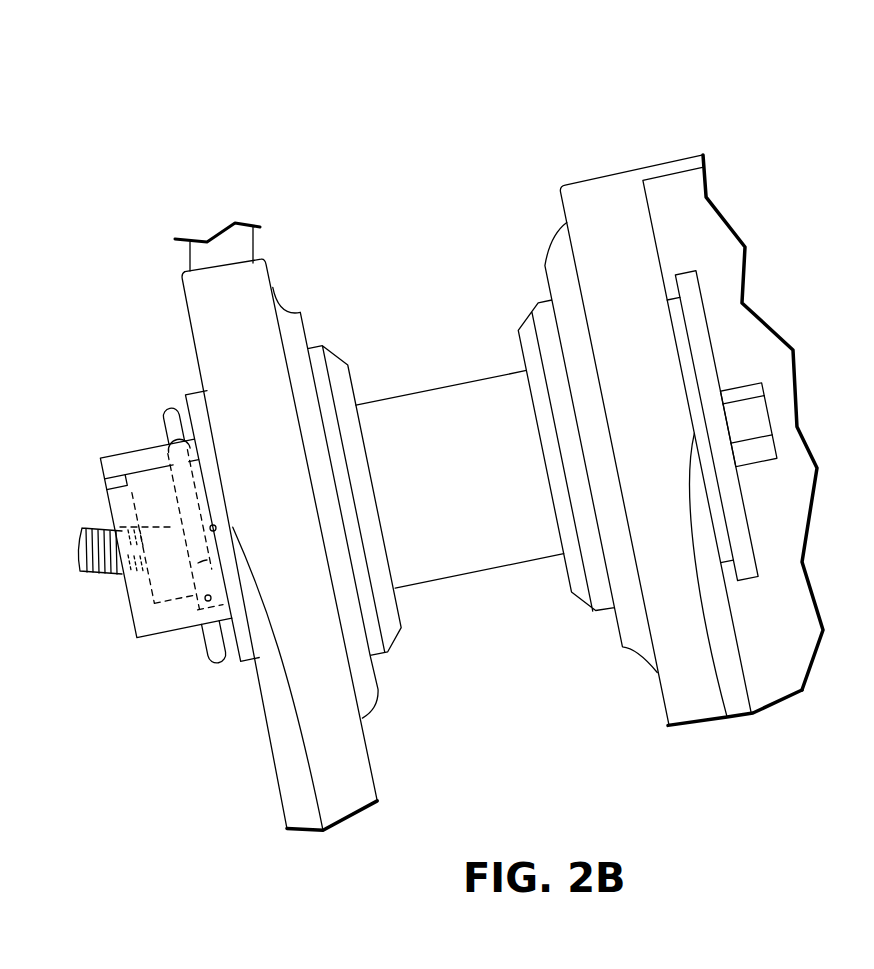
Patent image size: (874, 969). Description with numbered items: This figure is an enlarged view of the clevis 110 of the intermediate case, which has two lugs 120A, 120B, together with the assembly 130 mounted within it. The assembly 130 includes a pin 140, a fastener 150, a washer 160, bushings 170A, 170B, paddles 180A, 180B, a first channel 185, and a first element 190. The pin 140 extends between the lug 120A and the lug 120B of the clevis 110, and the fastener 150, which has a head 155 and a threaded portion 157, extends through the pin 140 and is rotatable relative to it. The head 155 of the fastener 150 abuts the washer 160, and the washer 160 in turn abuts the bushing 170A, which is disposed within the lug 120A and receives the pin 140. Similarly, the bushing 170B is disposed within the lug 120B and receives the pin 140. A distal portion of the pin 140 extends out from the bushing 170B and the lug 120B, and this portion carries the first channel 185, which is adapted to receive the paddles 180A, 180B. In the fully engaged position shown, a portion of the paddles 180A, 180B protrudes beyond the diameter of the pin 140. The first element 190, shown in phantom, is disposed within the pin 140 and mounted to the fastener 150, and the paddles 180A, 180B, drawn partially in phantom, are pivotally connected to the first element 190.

The clevis 110 is at (680, 157).
The lug 120A is at (688, 697).
The lug 120B is at (338, 790).
The assembly 130 is at (470, 408).
The pin 140 is at (468, 550).
The fastener 150 is at (763, 377).
The head 155 is at (748, 378).
The threaded portion 157 is at (80, 555).
The washer 160 is at (689, 278).
The bushing 170A is at (533, 331).
The bushing 170B is at (335, 368).
The paddle 180A is at (170, 417).
The paddle 180B is at (215, 667).
The first channel 185 is at (94, 444).
The first element 190 is at (200, 555).